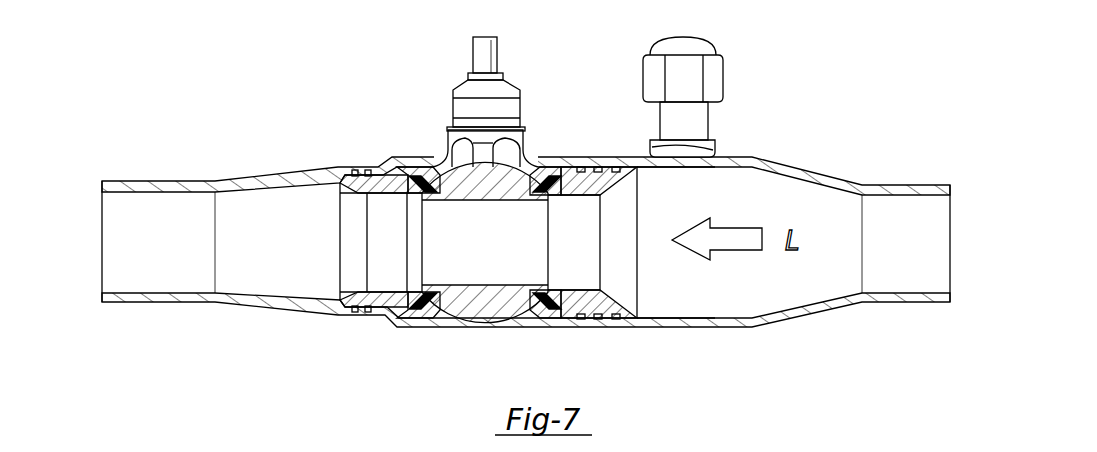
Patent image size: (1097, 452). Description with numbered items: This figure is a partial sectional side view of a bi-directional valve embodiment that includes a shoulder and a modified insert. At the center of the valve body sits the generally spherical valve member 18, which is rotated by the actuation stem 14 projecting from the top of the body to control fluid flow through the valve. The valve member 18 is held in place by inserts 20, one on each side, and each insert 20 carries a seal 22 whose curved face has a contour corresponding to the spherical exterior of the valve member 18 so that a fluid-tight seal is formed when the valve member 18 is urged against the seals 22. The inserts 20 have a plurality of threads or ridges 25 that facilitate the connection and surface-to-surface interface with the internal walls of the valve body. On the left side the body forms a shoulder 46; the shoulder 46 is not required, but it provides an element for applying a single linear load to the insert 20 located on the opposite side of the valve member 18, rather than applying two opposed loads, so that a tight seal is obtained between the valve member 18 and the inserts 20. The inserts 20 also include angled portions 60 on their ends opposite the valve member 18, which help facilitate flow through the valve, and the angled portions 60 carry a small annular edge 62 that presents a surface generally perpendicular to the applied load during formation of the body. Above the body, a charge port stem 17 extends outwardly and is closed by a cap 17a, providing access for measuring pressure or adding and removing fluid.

The actuation stem 14 is at (487, 52).
The charge port stem 17 is at (708, 117).
The cap 17a is at (704, 70).
The valve member 18 is at (487, 300).
The insert 20 is at (588, 316).
The seal 22 is at (420, 178).
The threads or ridges 25 is at (617, 166).
The shoulder 46 is at (390, 160).
The angled portion 60 is at (617, 180).
The annular edge 62 is at (660, 176).